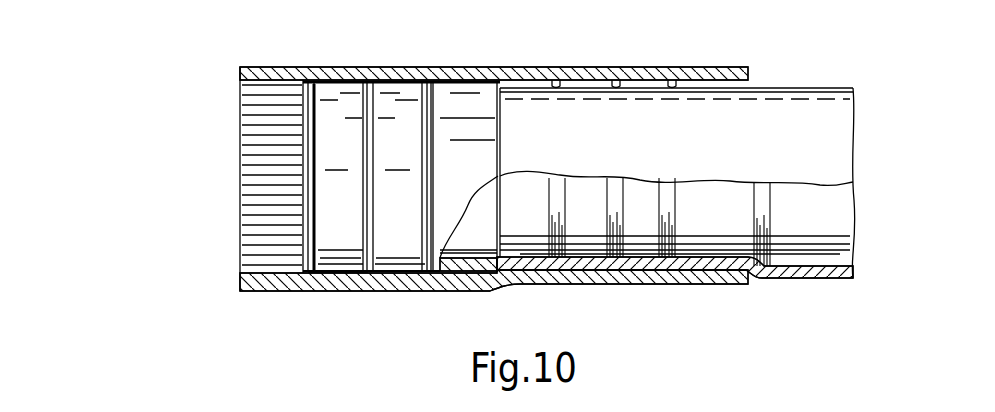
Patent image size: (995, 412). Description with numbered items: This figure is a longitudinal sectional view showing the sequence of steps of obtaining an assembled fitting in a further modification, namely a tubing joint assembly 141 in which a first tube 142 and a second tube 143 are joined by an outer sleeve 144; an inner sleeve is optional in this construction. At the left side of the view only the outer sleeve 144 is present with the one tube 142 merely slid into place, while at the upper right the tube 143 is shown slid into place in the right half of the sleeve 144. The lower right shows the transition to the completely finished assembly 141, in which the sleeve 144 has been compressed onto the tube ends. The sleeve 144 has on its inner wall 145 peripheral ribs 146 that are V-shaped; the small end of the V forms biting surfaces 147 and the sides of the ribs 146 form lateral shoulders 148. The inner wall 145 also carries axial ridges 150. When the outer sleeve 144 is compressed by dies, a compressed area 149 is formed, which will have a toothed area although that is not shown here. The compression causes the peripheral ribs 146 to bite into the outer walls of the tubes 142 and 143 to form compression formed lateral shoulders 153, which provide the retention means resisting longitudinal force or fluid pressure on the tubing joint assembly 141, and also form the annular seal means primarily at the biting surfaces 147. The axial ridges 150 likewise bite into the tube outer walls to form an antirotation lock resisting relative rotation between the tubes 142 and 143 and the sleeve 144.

The tubing joint assembly 141 is at (670, 61).
The first tube 142 is at (462, 270).
The second tube 143 is at (815, 88).
The outer sleeve 144 is at (512, 67).
The inner wall 145 is at (393, 86).
The peripheral ribs 146 is at (364, 84).
The biting surfaces 147 is at (432, 83).
The lateral shoulders 148 is at (358, 270).
The compressed area 149 is at (614, 288).
The axial ridges 150 is at (257, 93).
The compression formed lateral shoulders 153 is at (565, 256).